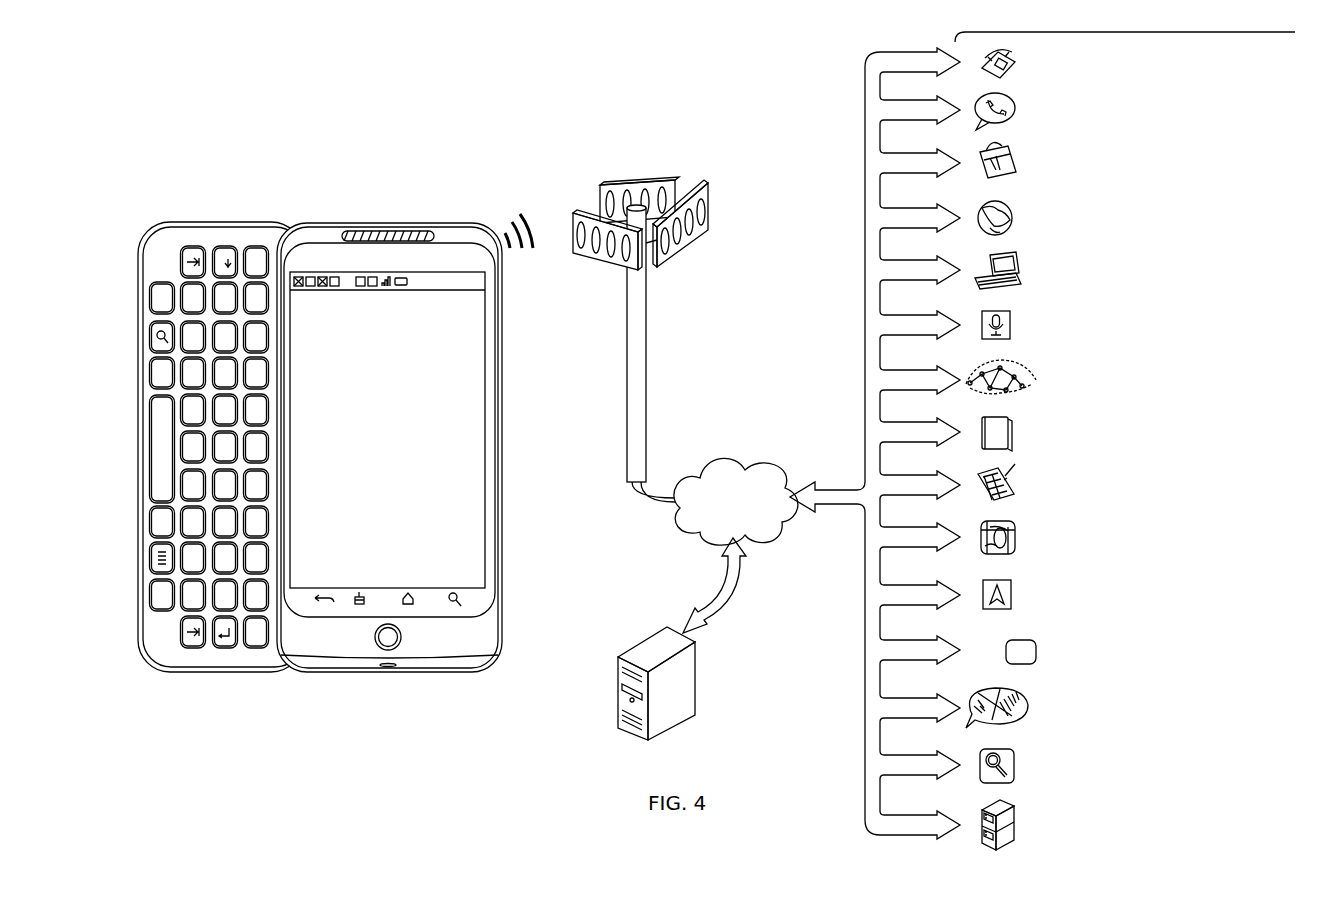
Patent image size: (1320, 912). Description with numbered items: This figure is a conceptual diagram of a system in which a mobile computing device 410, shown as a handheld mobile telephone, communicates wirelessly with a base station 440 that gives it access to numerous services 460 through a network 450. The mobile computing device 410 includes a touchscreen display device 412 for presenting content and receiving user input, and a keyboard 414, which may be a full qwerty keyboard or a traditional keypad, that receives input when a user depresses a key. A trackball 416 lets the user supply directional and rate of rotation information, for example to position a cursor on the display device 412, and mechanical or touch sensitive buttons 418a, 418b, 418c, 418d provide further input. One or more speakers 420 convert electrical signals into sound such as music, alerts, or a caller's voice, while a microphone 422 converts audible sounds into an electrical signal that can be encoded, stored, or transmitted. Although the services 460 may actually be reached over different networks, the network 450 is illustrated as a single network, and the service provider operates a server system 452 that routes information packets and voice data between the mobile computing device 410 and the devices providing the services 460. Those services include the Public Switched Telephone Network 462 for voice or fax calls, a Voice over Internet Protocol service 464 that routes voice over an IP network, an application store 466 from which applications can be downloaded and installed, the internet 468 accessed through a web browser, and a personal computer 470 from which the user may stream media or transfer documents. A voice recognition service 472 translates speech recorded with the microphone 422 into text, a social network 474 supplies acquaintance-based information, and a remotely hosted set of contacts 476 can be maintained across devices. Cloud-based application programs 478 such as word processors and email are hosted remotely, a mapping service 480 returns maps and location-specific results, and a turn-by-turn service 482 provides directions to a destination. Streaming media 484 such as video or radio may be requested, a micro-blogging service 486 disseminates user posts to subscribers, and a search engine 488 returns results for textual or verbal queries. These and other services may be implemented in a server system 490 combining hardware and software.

The mobile computing device 410 is at (447, 166).
The touchscreen display device 412 is at (487, 440).
The keyboard 414 is at (245, 222).
The trackball 416 is at (400, 641).
The button 418a is at (322, 592).
The button 418b is at (361, 590).
The button 418c is at (408, 592).
The button 418d is at (455, 592).
The speaker 420 is at (392, 232).
The microphone 422 is at (388, 672).
The base station 440 is at (693, 151).
The network 450 is at (738, 460).
The service provider server system 452 is at (700, 682).
The services 460 is at (1099, 32).
The Public Switched Telephone Network 462 is at (1022, 66).
The Voice over Internet Protocol service 464 is at (1018, 112).
The application store 466 is at (1012, 162).
The internet 468 is at (1016, 218).
The personal computer 470 is at (1018, 266).
The voice recognition service 472 is at (1014, 318).
The social network 474 is at (1030, 372).
The contacts 476 is at (1020, 428).
The cloud-based application programs 478 is at (1020, 484).
The mapping service 480 is at (1017, 532).
The turn-by-turn service 482 is at (1015, 594).
The streaming media 484 is at (1035, 646).
The micro-blogging service 486 is at (1025, 704).
The search engine 488 is at (1018, 760).
The server system 490 is at (1017, 818).